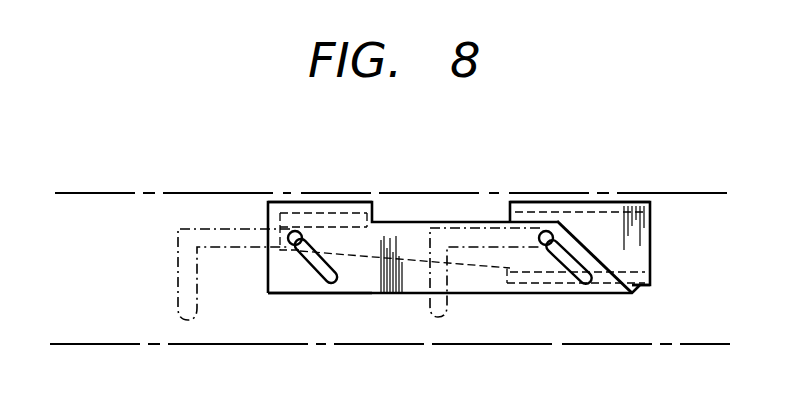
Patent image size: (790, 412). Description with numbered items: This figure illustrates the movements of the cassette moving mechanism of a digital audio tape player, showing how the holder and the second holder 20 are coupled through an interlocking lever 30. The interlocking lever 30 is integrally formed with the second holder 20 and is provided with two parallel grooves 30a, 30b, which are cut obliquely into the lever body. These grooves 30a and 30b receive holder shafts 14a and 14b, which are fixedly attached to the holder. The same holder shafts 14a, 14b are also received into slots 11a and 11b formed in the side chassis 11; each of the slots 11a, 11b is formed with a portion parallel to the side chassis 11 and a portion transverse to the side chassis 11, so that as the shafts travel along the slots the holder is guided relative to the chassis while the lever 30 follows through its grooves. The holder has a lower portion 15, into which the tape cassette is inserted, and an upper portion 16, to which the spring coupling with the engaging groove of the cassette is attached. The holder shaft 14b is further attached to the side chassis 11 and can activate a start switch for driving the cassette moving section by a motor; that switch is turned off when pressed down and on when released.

The side chassis 11 is at (113, 201).
The slot 11a is at (440, 235).
The slot 11b is at (204, 228).
The holder shaft 14a is at (545, 231).
The holder shaft 14b is at (294, 231).
The lower portion 15 is at (640, 287).
The upper portion 16 is at (616, 201).
The second holder 20 is at (334, 201).
The interlocking lever 30 is at (365, 280).
The groove 30a is at (565, 295).
The groove 30b is at (313, 278).